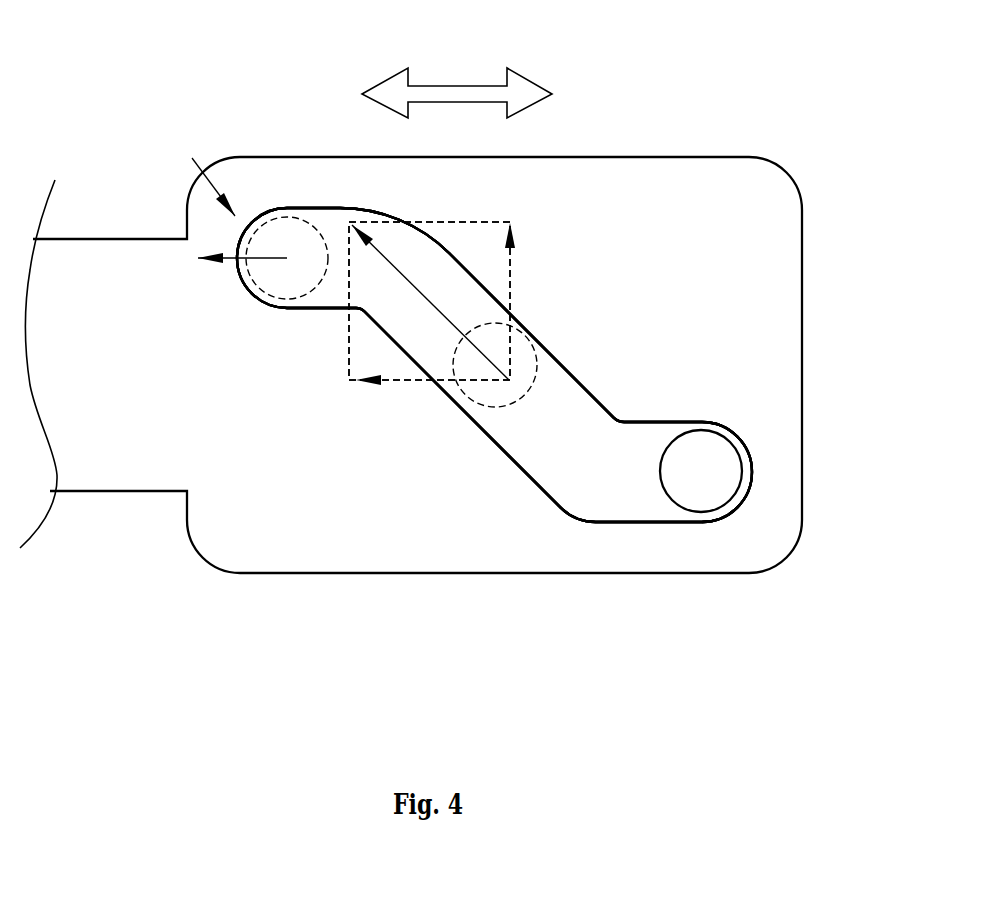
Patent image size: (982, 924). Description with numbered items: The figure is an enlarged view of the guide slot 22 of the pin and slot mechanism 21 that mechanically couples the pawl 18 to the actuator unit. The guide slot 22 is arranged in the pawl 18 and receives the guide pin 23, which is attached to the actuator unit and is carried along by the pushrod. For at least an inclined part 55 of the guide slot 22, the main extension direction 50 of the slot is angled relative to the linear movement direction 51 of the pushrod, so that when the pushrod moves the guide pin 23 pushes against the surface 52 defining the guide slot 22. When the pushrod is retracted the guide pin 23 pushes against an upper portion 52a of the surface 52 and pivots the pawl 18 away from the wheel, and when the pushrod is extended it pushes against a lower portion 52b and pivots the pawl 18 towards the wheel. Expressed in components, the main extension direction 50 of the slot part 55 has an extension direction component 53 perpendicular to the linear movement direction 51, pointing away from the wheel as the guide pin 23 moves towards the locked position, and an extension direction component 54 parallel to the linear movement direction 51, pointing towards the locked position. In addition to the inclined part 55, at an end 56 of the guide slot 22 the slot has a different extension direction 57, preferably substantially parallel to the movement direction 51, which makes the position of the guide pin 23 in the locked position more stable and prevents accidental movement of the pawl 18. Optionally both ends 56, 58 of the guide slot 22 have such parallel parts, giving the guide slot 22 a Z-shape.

The pawl 18 is at (120, 363).
The pin and slot mechanism 21 is at (732, 122).
The guide slot 22 is at (532, 467).
The guide pin 23 is at (705, 472).
The main extension direction 50 is at (407, 273).
The linear movement direction 51 is at (460, 86).
The guide slot defining surface 52 is at (565, 370).
The upper portion of the guide slot defining surface 52a is at (472, 280).
The lower portion of the guide slot defining surface 52b is at (560, 412).
The extension direction component perpendicular to the linear movement direction 53 is at (513, 281).
The extension direction component parallel to the linear movement direction 54 is at (400, 380).
The inclined part of the guide slot 55 is at (498, 420).
The end of the guide slot 56 is at (192, 158).
The extension direction at the slot end 57 is at (258, 257).
The end of the guide slot 58 is at (737, 523).